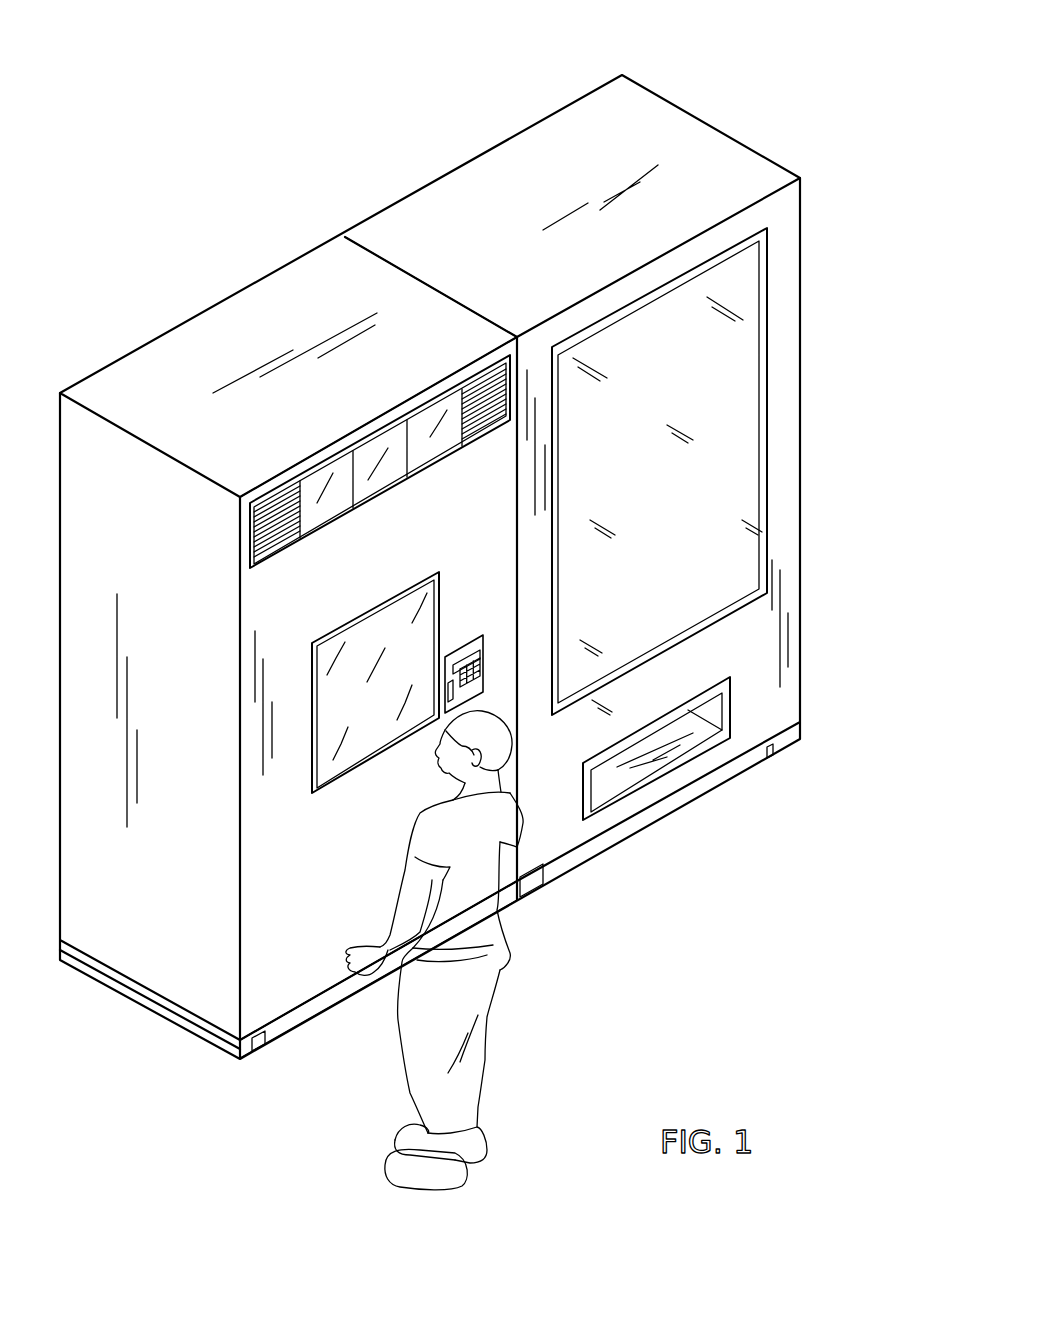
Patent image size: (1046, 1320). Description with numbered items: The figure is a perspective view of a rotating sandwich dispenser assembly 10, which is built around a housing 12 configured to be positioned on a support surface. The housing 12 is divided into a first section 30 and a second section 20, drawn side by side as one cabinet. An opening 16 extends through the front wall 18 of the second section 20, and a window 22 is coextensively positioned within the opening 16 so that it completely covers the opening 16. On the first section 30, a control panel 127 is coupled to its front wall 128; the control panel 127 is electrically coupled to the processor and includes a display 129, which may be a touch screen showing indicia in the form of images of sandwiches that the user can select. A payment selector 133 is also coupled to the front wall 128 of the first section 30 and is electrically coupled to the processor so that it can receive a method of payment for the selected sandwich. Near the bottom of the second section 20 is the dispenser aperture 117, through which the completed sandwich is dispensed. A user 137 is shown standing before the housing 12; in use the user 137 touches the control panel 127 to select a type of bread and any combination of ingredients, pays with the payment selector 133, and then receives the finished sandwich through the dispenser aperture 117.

The rotating sandwich dispenser assembly 10 is at (221, 182).
The housing 12 is at (311, 212).
The second section 20 is at (448, 145).
The first section 30 is at (184, 302).
The front wall 18 is at (787, 260).
The opening 16 is at (752, 362).
The window 22 is at (735, 425).
The dispenser aperture 117 is at (590, 788).
The control panel 127 is at (308, 693).
The display 129 is at (297, 745).
The payment selector 133 is at (462, 637).
The front wall 128 is at (303, 951).
The user 137 is at (497, 943).